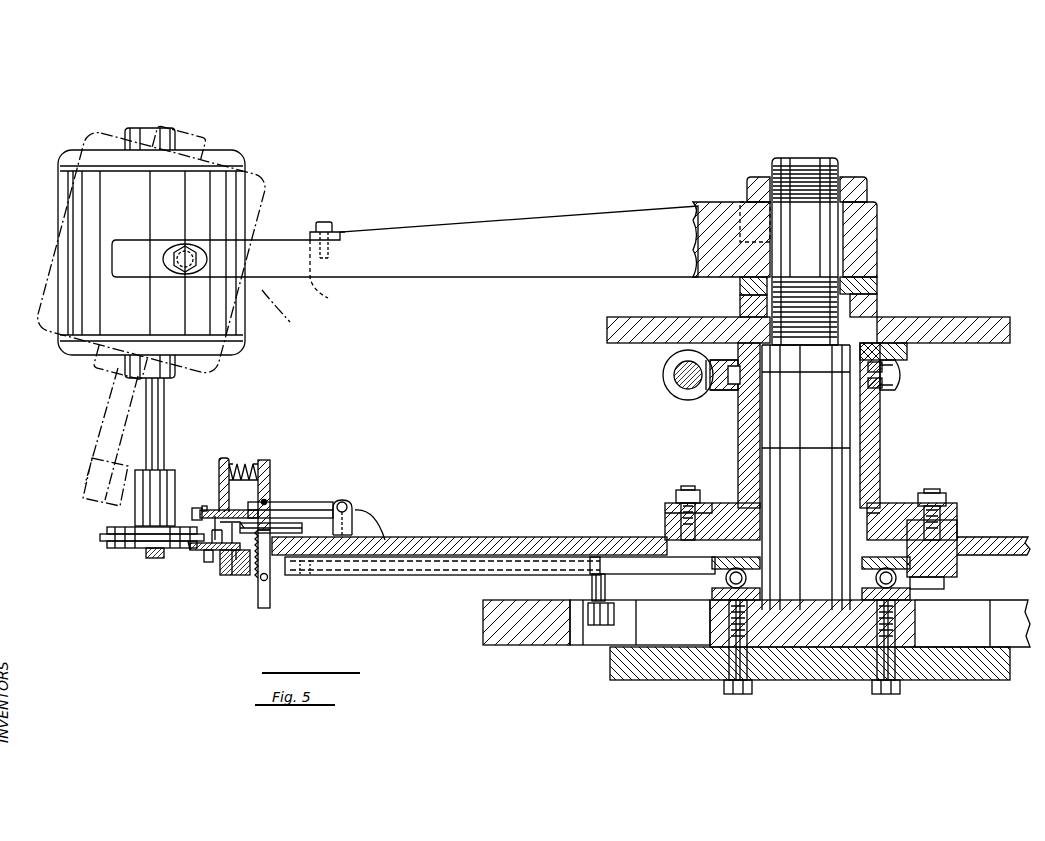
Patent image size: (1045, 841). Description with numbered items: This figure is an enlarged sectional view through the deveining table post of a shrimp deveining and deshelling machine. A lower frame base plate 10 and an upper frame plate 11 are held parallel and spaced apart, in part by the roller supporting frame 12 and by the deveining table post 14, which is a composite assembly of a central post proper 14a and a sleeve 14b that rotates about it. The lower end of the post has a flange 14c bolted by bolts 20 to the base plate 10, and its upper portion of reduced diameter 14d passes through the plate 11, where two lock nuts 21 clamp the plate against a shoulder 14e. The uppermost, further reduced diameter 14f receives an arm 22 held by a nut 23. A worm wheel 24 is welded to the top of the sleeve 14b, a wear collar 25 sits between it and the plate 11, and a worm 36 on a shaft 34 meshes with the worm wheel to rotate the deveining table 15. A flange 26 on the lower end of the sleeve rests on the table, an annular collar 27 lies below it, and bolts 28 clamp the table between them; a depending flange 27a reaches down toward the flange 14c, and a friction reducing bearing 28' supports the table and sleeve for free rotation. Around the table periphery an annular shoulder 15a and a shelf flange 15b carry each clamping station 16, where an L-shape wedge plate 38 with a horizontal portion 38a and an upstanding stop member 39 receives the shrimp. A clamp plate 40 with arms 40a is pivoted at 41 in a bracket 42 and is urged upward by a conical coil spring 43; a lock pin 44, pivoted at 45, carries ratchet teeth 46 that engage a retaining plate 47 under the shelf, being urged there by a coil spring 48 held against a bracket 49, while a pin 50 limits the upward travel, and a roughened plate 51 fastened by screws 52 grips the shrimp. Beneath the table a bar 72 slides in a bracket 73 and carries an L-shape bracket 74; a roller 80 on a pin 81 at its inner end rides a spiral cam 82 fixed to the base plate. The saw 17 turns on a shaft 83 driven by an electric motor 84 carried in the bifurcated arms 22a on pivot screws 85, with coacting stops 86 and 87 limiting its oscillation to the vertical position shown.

The lower frame base plate 10 is at (982, 681).
The upper frame plate 11 is at (998, 317).
The roller supporting frame 12 is at (134, 446).
The deveining table post 14 is at (847, 425).
The central post proper 14a is at (806, 384).
The sleeve 14b is at (882, 438).
The flange 14c is at (908, 637).
The portion of reduced diameter 14d is at (740, 303).
The shoulder 14e is at (862, 318).
The further reduced diameter portion 14f is at (880, 228).
The deveining table 15 is at (484, 537).
The annular shoulder 15a is at (237, 568).
The flange 15b is at (208, 562).
The shrimp clamping station 16 is at (292, 530).
The rotatable saw 17 is at (106, 538).
The bolts 20 is at (740, 694).
The lock nuts 21 is at (880, 285).
The arm 22 is at (426, 225).
The bifurcated arms 22a is at (333, 277).
The nut 23 is at (752, 176).
The worm wheel 24 is at (722, 392).
The wear collar 25 is at (907, 352).
The flange 26 is at (900, 503).
The annular collar 27 is at (960, 569).
The depending flange 27a is at (920, 594).
The bolts 28 is at (825, 502).
The friction reducing bearing 28' is at (811, 577).
The shaft 34 is at (663, 376).
The worm 36 is at (676, 386).
The L-shape wedge plate 38 is at (215, 536).
The horizontal portion 38a is at (198, 550).
The stop member 39 is at (215, 524).
The clamp plate 40 is at (206, 510).
The arms 40a is at (318, 502).
The pivot 41 is at (346, 502).
The bracket 42 is at (352, 510).
The conical coil spring 43 is at (290, 527).
The lock pin 44 is at (270, 472).
The pivot point 45 is at (266, 501).
The ratchet teeth 46 is at (256, 580).
The retaining plate 47 is at (226, 560).
The coil spring 48 is at (245, 462).
The bracket 49 is at (223, 457).
The pin 50 is at (268, 580).
The roughened plate 51 is at (192, 513).
The screws 52 is at (205, 505).
The bar 72 is at (648, 574).
The bracket 73 is at (386, 576).
The L-shape bracket 74 is at (388, 535).
The roller 80 is at (616, 616).
The pin 81 is at (592, 588).
The spiral cam 82 is at (576, 645).
The shaft 83 is at (110, 405).
The electric motor 84 is at (62, 164).
The pivot screws 85 is at (200, 259).
The stop 86 is at (282, 316).
The stop 87 is at (318, 229).